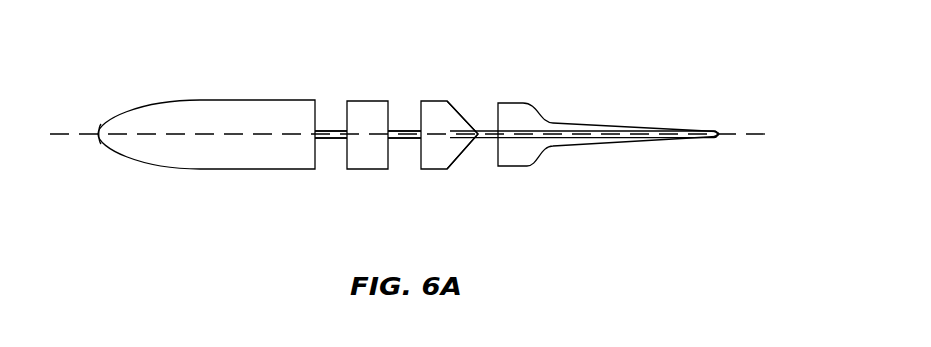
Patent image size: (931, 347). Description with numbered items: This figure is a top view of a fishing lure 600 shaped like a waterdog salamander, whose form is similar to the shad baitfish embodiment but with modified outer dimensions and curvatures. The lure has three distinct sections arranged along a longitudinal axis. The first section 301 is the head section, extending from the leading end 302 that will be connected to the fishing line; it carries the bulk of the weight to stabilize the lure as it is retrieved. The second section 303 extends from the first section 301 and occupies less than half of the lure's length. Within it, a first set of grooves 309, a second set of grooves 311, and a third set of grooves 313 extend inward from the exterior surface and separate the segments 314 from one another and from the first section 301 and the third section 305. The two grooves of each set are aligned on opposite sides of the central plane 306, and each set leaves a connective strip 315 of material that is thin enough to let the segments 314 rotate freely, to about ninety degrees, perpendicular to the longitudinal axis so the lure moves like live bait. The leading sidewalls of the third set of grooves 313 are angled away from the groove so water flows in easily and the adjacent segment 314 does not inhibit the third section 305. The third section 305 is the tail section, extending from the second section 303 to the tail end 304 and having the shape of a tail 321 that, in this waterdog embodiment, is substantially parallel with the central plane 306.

The fishing lure 600 is at (290, 66).
The first section 301 is at (97, 221).
The leading end 302 is at (100, 130).
The second section 303 is at (318, 221).
The tail end 304 is at (723, 138).
The third section 305 is at (500, 221).
The central plane 306 is at (757, 132).
The first set of grooves 309 is at (333, 163).
The second set of grooves 311 is at (406, 163).
The third set of grooves 313 is at (478, 161).
The segment 314 is at (366, 100).
The connective strip 315 is at (328, 130).
The tail 321 is at (553, 131).